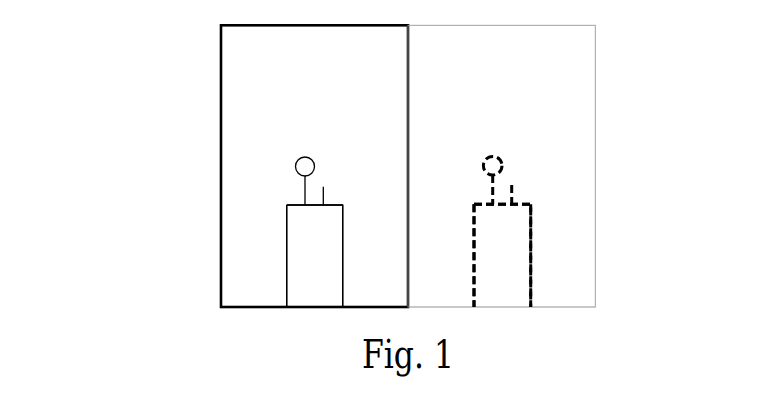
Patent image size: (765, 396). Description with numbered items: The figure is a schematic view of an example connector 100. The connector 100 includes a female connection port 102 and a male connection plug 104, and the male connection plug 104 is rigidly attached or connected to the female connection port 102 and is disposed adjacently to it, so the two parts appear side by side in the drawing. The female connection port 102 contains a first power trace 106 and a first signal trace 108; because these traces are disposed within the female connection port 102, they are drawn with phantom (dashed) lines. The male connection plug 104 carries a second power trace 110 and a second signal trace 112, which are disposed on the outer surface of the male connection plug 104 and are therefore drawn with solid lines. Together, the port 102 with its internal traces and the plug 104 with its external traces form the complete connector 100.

The connector 100 is at (125, 46).
The female connection port 102 is at (590, 143).
The male connection plug 104 is at (233, 196).
The first power trace 106 is at (474, 255).
The first signal trace 108 is at (531, 262).
The second power trace 110 is at (287, 272).
The second signal trace 112 is at (343, 240).